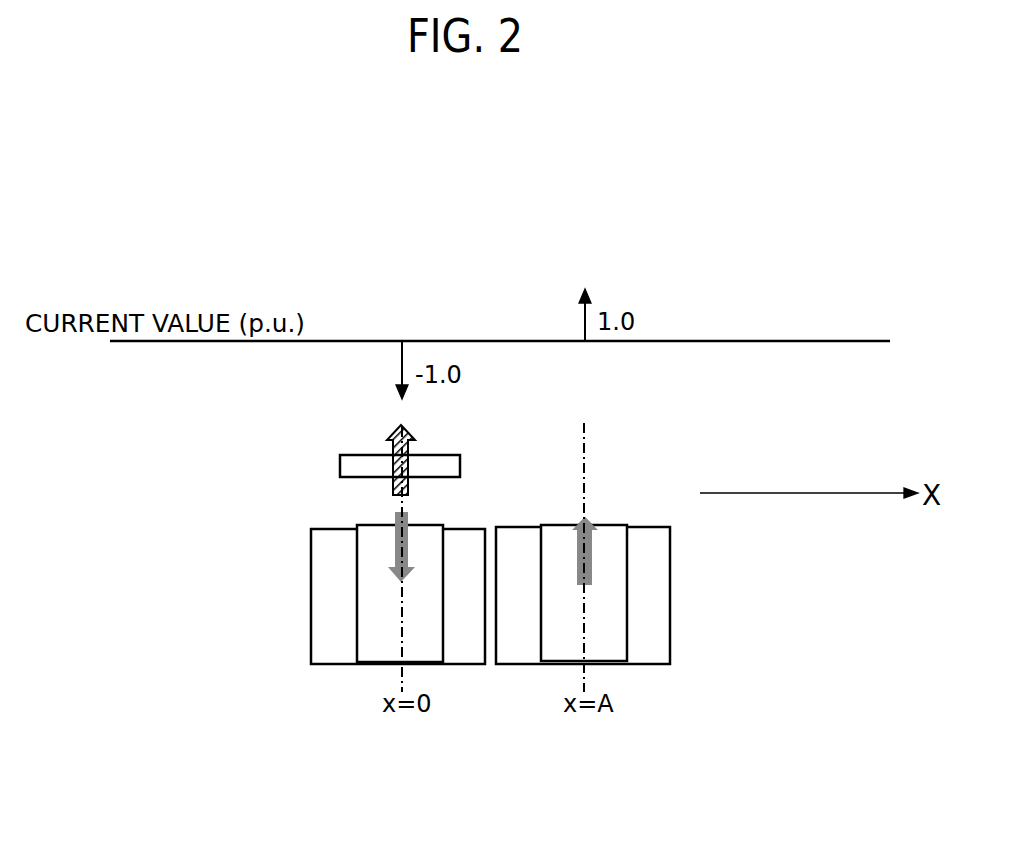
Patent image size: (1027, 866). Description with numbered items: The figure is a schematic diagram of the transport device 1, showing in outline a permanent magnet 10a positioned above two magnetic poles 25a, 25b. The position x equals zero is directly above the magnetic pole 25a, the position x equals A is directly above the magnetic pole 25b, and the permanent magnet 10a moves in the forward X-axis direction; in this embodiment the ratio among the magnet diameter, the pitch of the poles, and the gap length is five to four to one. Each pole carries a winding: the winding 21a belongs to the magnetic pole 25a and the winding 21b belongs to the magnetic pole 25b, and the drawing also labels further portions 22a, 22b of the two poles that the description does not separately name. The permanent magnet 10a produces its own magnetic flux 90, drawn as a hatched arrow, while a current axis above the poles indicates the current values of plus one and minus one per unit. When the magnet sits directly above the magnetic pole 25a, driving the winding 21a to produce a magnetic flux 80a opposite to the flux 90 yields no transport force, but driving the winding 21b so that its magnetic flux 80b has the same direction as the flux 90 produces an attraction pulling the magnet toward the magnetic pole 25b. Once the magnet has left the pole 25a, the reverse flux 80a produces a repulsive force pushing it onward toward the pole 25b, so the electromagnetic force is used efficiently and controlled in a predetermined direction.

The transport device 1 is at (153, 232).
The permanent magnet 10a is at (362, 460).
The magnetic flux of the permanent magnet 90 is at (400, 433).
The magnetic flux 80a is at (400, 518).
The magnetic flux 80b is at (582, 522).
The winding 21a is at (323, 665).
The inner coil 22a is at (427, 665).
The magnetic pole 25a is at (483, 775).
The winding 21b is at (513, 665).
The inner coil 22b is at (610, 665).
The magnetic pole 25b is at (670, 775).